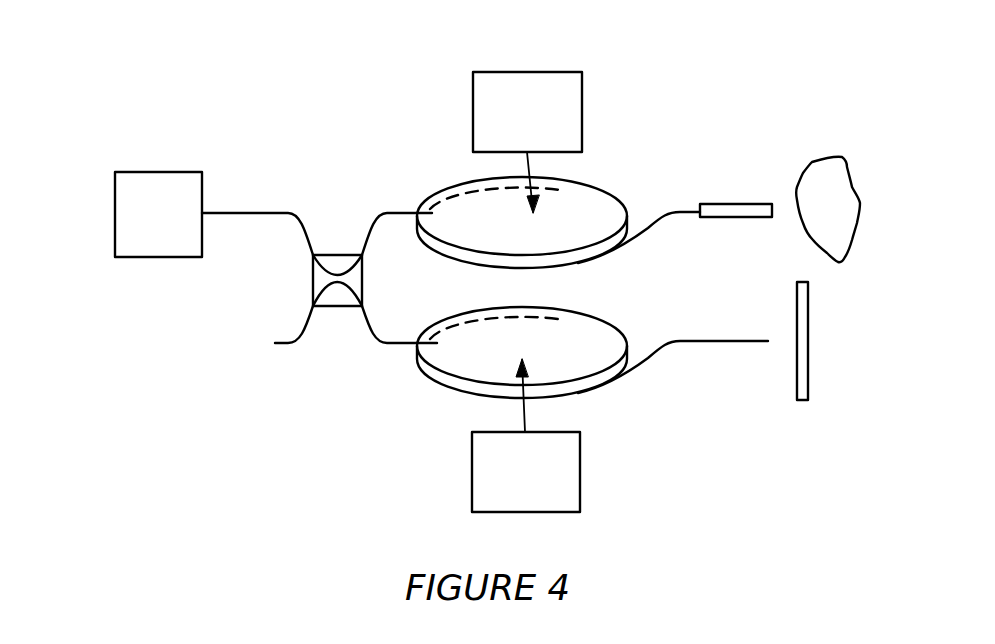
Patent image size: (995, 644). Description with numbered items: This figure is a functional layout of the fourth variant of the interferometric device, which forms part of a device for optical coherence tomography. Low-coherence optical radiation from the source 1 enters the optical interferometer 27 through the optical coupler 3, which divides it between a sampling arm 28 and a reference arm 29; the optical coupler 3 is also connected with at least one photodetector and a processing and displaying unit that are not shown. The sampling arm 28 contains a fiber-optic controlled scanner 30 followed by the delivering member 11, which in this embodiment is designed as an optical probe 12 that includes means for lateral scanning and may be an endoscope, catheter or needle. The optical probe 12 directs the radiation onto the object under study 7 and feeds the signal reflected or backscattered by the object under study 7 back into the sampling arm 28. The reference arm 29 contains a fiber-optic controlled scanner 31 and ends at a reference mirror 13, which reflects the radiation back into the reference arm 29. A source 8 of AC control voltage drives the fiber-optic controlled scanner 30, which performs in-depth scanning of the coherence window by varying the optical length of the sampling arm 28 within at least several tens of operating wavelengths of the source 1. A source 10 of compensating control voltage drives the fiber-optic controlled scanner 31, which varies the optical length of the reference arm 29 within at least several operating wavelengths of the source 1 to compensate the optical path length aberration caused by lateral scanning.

The source 1 is at (158, 214).
The optical coupler 3 is at (318, 277).
The object under study 7 is at (828, 184).
The source of AC control voltage 8 is at (527, 142).
The source of compensating control voltage 10 is at (526, 435).
The delivering member 11 is at (677, 204).
The optical probe 12 is at (738, 181).
The reference mirror 13 is at (713, 363).
The optical interferometer 27 is at (257, 171).
The sampling arm 28 is at (397, 216).
The reference arm 29 is at (399, 341).
The fiber-optic controlled scanner 30 is at (524, 205).
The fiber-optic controlled scanner 31 is at (536, 366).